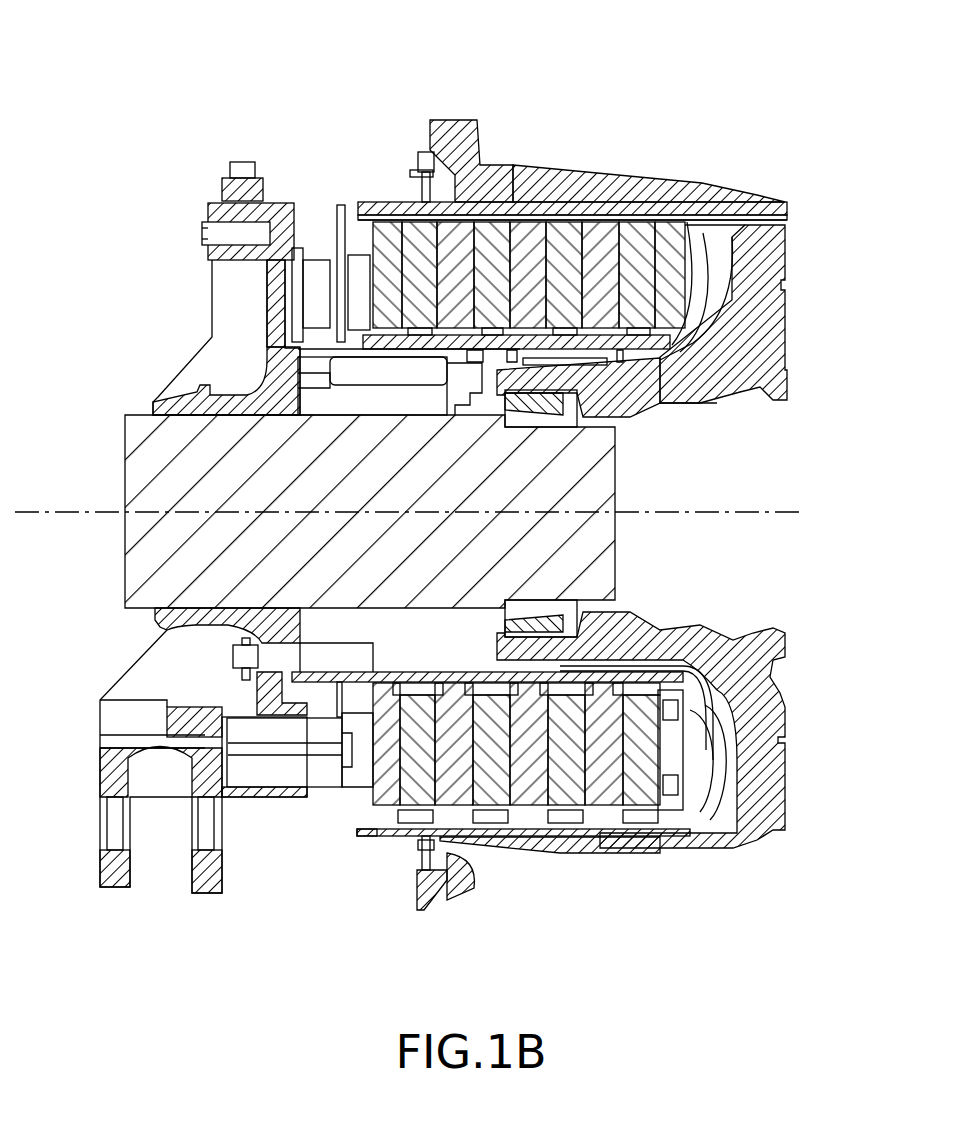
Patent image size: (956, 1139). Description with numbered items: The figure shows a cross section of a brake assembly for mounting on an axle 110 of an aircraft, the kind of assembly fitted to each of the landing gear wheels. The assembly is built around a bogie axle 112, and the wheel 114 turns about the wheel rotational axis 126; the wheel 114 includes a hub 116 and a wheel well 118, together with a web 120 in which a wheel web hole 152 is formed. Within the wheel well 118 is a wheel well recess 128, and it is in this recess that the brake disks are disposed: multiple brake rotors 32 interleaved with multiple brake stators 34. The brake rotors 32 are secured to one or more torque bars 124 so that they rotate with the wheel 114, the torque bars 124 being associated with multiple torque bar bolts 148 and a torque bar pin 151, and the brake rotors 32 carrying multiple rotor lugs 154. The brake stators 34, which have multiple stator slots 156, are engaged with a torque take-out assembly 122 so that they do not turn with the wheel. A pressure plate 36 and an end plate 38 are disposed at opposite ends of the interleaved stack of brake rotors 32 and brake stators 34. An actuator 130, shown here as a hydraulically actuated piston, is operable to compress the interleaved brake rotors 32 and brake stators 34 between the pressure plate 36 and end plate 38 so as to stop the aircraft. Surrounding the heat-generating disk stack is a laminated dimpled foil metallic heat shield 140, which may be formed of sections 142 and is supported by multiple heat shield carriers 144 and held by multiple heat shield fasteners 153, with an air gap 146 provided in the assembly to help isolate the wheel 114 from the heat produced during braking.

The brake assembly for mounting on an axle 110 is at (826, 100).
The bogie axle 112 is at (102, 458).
The wheel 114 is at (607, 516).
The hub 116 is at (571, 603).
The wheel well 118 is at (775, 198).
The web 120 is at (770, 727).
The torque take-out assembly 122 is at (460, 388).
The torque bars 124 is at (372, 204).
The wheel rotational axis 126 is at (680, 510).
The wheel well recess 128 is at (755, 305).
The actuator 130 is at (272, 828).
The laminated dimpled foil metallic heat shield 140 is at (378, 870).
The sections 142 is at (560, 185).
The heat shield carriers 144 is at (487, 905).
The air gap 146 is at (452, 182).
The torque bar bolts 148 is at (420, 190).
The torque bar pin 151 is at (730, 232).
The wheel web hole 152 is at (757, 512).
The heat shield fasteners 153 is at (428, 880).
The rotor lugs 154 is at (495, 203).
The stator slots 156 is at (418, 369).
The brake rotors 32 is at (409, 289).
The brake stators 34 is at (445, 289).
The pressure plate 36 is at (376, 289).
The end plate 38 is at (654, 289).